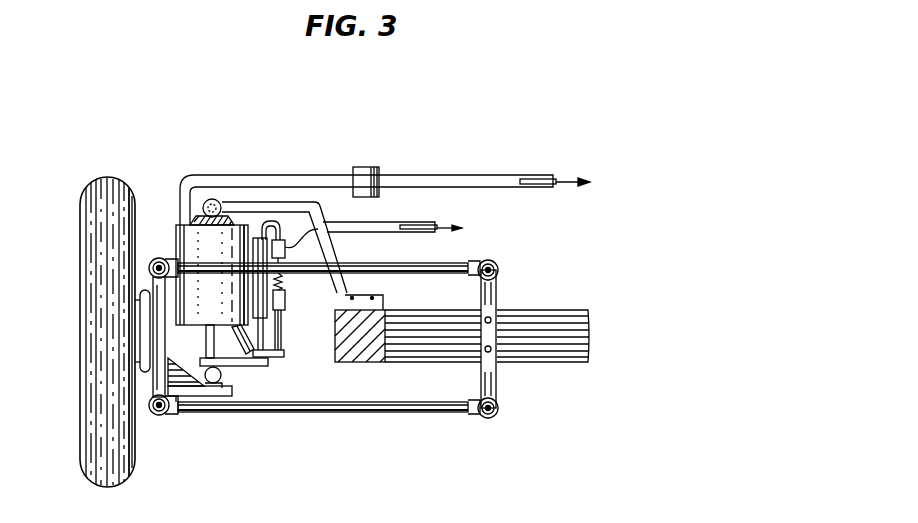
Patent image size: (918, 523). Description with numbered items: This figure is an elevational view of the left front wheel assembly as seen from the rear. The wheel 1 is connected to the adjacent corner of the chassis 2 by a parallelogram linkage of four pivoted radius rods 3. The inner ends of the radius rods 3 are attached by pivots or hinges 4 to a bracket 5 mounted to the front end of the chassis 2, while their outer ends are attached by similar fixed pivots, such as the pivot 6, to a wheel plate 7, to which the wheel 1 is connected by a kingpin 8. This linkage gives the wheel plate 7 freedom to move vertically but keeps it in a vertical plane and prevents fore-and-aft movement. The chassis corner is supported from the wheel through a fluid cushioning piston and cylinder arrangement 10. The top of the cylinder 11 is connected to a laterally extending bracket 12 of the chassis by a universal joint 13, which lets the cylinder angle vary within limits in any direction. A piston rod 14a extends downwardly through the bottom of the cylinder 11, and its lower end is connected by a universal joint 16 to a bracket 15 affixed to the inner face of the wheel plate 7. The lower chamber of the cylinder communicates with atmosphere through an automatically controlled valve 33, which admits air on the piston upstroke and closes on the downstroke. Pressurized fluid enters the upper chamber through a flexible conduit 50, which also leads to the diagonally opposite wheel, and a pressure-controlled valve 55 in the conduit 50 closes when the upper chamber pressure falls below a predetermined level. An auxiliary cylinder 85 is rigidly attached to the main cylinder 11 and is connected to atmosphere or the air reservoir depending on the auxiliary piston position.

The wheel 1 is at (80, 277).
The chassis 2 is at (565, 311).
The radius rods 3 is at (410, 263).
The pivots or hinges 4 is at (492, 262).
The bracket 5 is at (499, 291).
The ball joint 6 is at (160, 416).
The wheel plate 7 is at (152, 397).
The kingpin 8 is at (140, 328).
The piston and cylinder arrangement 10 is at (420, 290).
The cylinder 11 is at (176, 240).
The laterally extending bracket 12 is at (251, 202).
The universal joint 13 is at (212, 199).
The piston rod 14a is at (206, 345).
The bracket 15 is at (200, 397).
The universal joint 16 is at (222, 376).
The automatically controlled valve 33 is at (234, 334).
The flexible conduit 50 is at (300, 175).
The pressure-controlled valve 55 is at (369, 166).
The auxiliary cylinder 85 is at (268, 317).